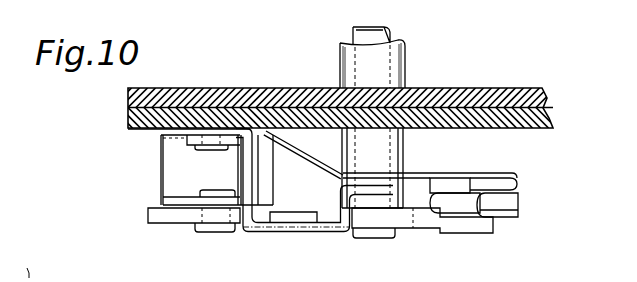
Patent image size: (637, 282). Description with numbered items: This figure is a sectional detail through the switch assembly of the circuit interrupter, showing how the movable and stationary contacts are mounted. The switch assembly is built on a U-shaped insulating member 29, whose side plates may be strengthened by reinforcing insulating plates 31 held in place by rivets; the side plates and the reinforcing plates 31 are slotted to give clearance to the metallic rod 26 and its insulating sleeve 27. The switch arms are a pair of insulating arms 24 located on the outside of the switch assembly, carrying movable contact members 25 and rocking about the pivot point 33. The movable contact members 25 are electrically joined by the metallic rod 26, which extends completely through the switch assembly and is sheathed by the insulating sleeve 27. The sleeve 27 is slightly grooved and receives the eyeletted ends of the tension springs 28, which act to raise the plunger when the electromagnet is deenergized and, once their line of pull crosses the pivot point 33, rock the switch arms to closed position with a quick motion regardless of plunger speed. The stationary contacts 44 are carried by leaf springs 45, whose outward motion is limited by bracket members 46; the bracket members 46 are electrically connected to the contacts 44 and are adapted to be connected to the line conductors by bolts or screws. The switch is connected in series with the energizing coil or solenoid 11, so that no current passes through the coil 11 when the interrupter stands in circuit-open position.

The magnetic coil or solenoid 11 is at (33, 259).
The insulating switch arms 24 is at (180, 218).
The movable contact members 25 is at (510, 205).
The metallic rod 26 is at (370, 240).
The insulating sleeve 27 is at (406, 58).
The tension springs 28 is at (380, 26).
The U-shaped insulating member 29 is at (240, 87).
The reinforcing insulating plates 31 is at (137, 131).
The pivot point of the switch arms 33 is at (220, 233).
The stationary contacts 44 is at (515, 185).
The leaf springs 45 is at (418, 173).
The bracket members 46 is at (345, 185).